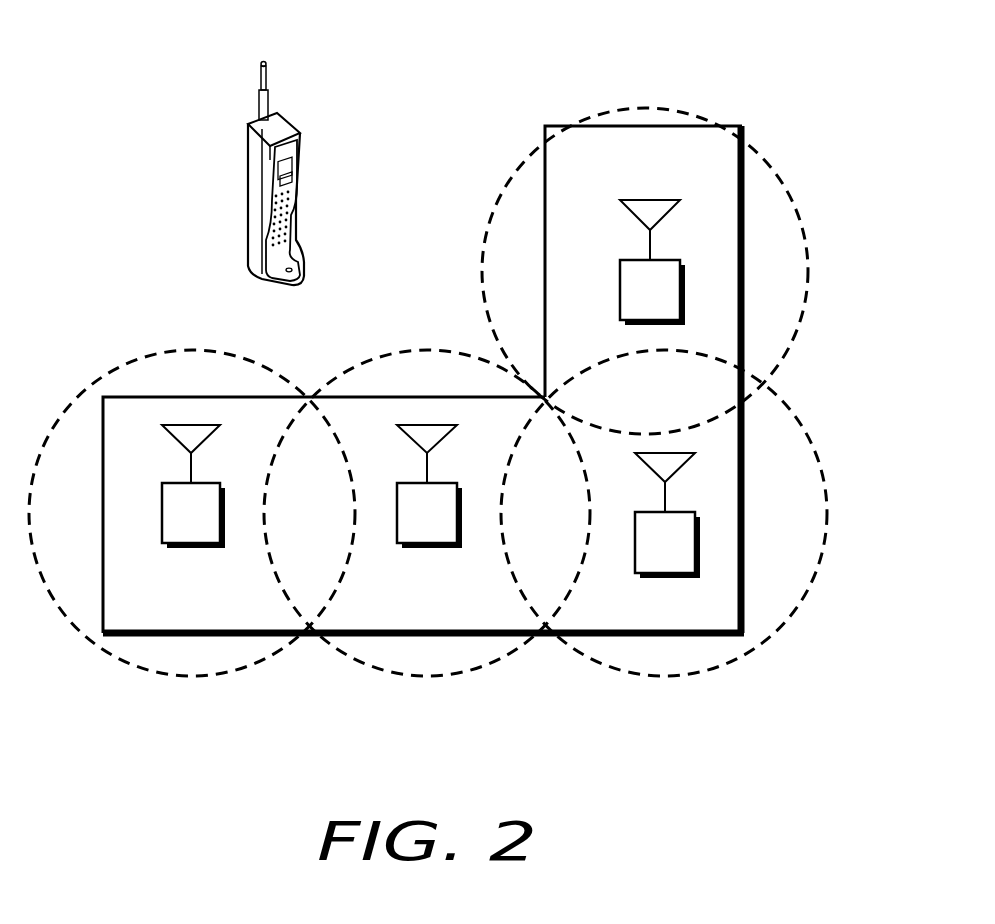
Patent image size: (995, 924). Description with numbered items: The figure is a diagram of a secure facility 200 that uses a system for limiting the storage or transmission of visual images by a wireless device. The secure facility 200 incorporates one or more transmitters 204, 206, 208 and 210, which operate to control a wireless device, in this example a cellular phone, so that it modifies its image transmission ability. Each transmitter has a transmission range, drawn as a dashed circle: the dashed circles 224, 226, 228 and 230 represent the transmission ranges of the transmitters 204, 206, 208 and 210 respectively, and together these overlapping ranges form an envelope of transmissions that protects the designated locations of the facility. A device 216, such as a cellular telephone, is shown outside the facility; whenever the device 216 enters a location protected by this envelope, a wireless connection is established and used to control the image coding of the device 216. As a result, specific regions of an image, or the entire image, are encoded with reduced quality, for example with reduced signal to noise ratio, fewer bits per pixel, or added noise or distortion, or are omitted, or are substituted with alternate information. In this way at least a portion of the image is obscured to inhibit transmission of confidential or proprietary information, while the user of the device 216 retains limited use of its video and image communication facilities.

The secure facility 200 is at (727, 205).
The transmitter 204 is at (627, 260).
The transmitter 206 is at (695, 512).
The transmitter 208 is at (393, 545).
The transmitter 210 is at (160, 545).
The device 216 is at (295, 177).
The dashed circle 224 is at (777, 168).
The dashed circle 226 is at (807, 428).
The dashed circle 228 is at (378, 356).
The dashed circle 230 is at (143, 357).